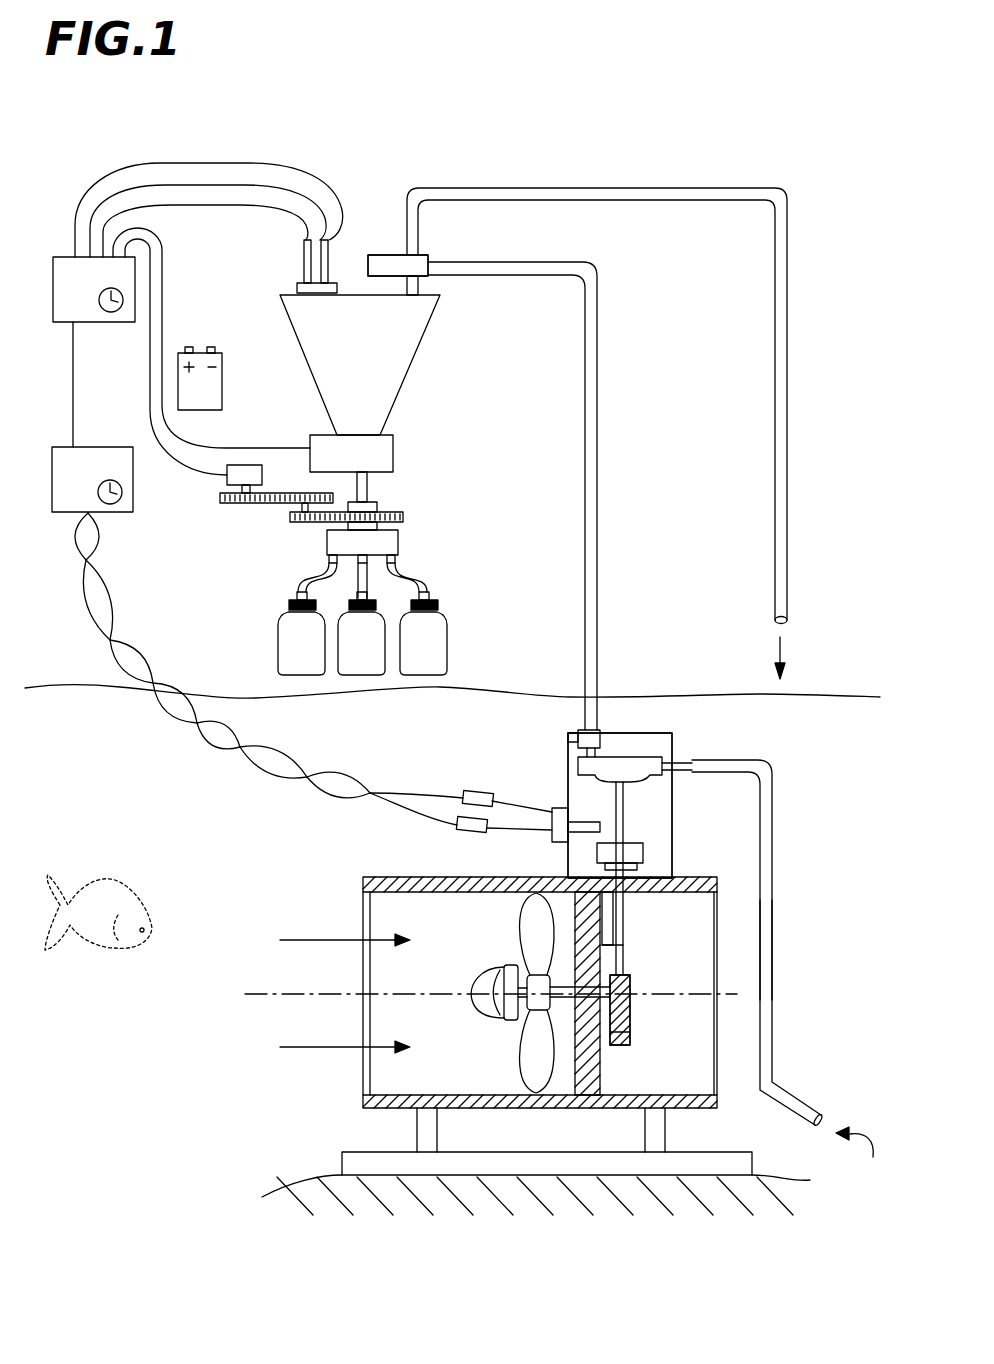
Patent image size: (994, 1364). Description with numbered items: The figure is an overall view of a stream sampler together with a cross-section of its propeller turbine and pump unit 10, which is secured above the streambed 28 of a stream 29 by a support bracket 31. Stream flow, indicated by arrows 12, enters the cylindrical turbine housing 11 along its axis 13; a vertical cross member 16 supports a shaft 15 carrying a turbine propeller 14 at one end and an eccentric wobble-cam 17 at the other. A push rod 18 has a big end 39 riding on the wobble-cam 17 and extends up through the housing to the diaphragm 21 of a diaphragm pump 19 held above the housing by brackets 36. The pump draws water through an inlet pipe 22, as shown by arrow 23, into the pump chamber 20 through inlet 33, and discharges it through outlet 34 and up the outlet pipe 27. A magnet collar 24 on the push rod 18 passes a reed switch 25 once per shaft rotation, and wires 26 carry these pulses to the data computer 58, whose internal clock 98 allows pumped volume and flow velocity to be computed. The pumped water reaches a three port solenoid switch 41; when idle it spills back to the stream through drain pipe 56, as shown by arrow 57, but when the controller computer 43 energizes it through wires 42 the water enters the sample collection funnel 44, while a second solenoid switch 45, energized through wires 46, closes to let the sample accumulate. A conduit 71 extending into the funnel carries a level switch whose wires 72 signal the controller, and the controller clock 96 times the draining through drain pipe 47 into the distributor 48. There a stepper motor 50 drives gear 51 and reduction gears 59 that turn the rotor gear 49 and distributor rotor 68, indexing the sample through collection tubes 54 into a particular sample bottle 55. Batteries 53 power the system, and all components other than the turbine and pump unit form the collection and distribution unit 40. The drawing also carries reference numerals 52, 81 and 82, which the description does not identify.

The turbine and pump unit 10 is at (385, 850).
The turbine housing 11 is at (362, 900).
The flow arrows 12 is at (307, 940).
The axis 13 is at (265, 995).
The turbine propeller 14 is at (525, 1062).
The shaft 15 is at (583, 1000).
The vertical cross member 16 is at (587, 938).
The wobble-cam 17 is at (630, 1015).
The push rod 18 is at (625, 905).
The diaphragm pump 19 is at (637, 733).
The pump chamber 20 is at (628, 763).
The diaphragm 21 is at (645, 780).
The inlet pipe 22 is at (775, 975).
The arrow 23 is at (854, 1110).
The collar 24 is at (643, 853).
The reed switch 25 is at (552, 808).
The wires 26 is at (212, 748).
The outlet pipe 27 is at (598, 565).
The streambed 28 is at (297, 1185).
The stream 29 is at (60, 688).
The support bracket 31 is at (487, 970).
The inlet 33 is at (690, 780).
The outlet 34 is at (578, 737).
The brackets 36 is at (650, 818).
The big end 39 is at (628, 978).
The collection and distribution unit 40 is at (127, 160).
The solenoid switch 41 is at (428, 274).
The wires 42 is at (320, 190).
The controller computer 43 is at (94, 289).
The sample collection funnel 44 is at (410, 368).
The solenoid switch 45 is at (393, 458).
The wires 46 is at (257, 447).
The drain pipe 47 is at (367, 488).
The distributor 48 is at (398, 543).
The rotor gear 49 is at (403, 517).
The DC stepper motor 50 is at (227, 480).
The gear 51 is at (240, 503).
The conduit 52 is at (150, 405).
The battery 53 is at (200, 378).
The sample collection tubes 54 is at (430, 571).
The sample bottle 55 is at (435, 637).
The drain pipe 56 is at (597, 406).
The arrow 57 is at (783, 640).
The data computer 58 is at (92, 479).
The reduction gears 59 is at (298, 525).
The distributor rotor 68 is at (328, 522).
The conduit 71 is at (368, 267).
The wires 72 is at (250, 188).
The nozzles 81 is at (300, 262).
The inner tube 82 is at (216, 207).
The clock 96 is at (112, 313).
The internal clock 98 is at (112, 505).